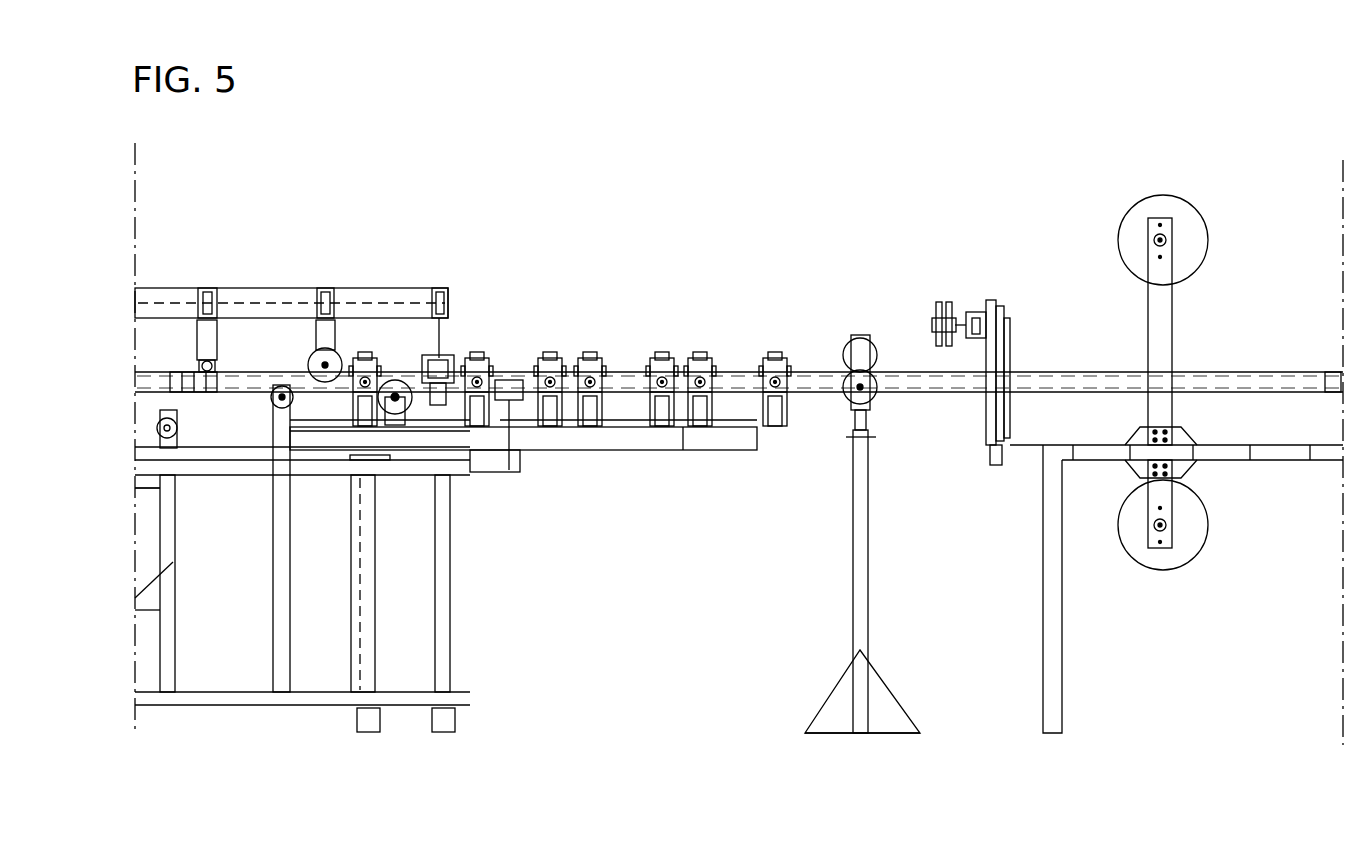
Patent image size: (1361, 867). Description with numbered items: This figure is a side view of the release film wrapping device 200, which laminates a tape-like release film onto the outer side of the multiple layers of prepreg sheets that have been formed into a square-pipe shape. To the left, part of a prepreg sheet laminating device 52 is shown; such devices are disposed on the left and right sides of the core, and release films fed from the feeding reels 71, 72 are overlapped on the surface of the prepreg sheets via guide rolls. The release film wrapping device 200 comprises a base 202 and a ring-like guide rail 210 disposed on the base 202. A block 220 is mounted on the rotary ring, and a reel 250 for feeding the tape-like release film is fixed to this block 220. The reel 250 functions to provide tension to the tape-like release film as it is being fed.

The prepreg sheet laminating device 52 is at (573, 475).
The feeding reel 71 is at (1190, 220).
The feeding reel 72 is at (1180, 553).
The release film wrapping device 200 is at (1000, 280).
The base 202 is at (1045, 560).
The ring-like guide rail 210 is at (992, 462).
The block 220 is at (984, 310).
The reel 250 is at (937, 320).